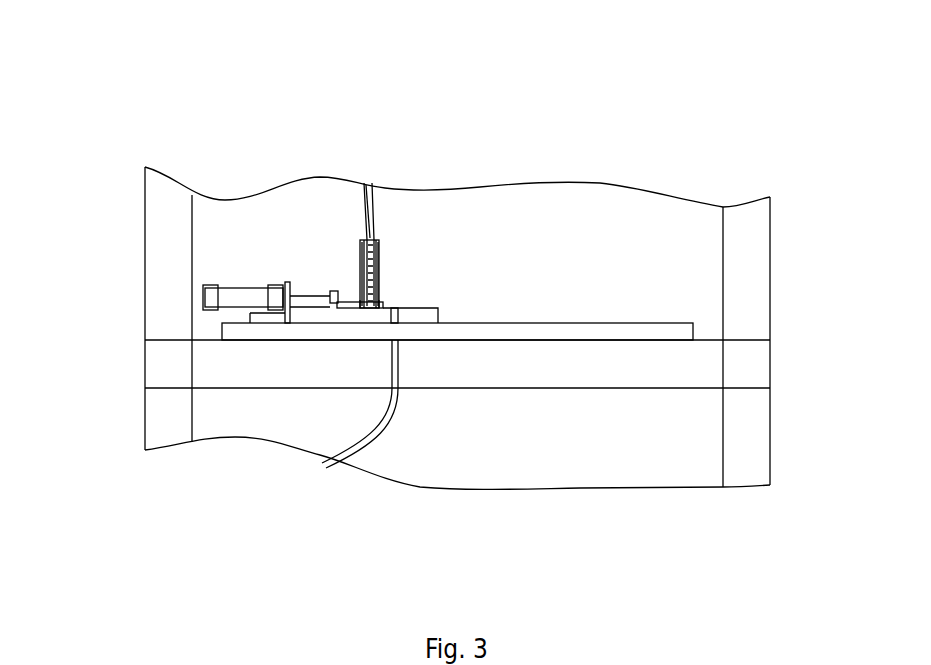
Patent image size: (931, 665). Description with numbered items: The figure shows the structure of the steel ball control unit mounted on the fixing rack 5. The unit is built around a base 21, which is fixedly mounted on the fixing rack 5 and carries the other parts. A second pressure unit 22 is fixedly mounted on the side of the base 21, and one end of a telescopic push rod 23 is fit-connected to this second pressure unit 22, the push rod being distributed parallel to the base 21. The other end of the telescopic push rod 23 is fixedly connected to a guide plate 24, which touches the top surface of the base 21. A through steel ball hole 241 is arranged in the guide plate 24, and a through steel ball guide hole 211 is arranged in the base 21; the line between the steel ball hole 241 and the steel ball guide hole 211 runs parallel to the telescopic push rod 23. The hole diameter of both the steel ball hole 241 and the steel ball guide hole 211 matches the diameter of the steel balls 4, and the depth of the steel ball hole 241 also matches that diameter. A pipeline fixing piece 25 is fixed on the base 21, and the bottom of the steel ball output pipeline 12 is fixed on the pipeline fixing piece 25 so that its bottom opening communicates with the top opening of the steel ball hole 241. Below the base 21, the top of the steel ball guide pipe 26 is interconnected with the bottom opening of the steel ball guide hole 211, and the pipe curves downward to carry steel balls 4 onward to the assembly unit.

The steel balls 4 is at (378, 288).
The fixing rack 5 is at (740, 361).
The steel ball output pipeline 12 is at (370, 183).
The base 21 is at (427, 318).
The second pressure unit 22 is at (243, 295).
The telescopic push rod 23 is at (313, 297).
The guide plate 24 is at (353, 300).
The pipeline fixing piece 25 is at (380, 264).
The steel ball guide pipe 26 is at (373, 427).
The steel ball guide hole 211 is at (398, 323).
The steel ball hole 241 is at (363, 308).